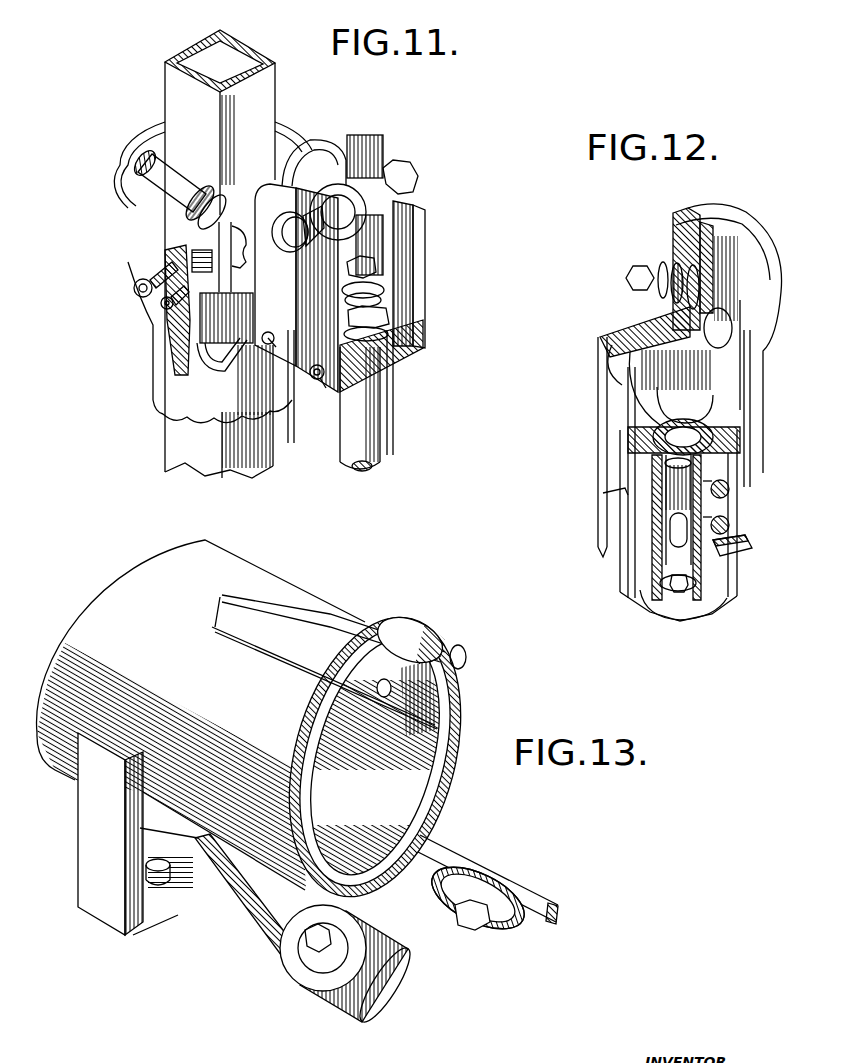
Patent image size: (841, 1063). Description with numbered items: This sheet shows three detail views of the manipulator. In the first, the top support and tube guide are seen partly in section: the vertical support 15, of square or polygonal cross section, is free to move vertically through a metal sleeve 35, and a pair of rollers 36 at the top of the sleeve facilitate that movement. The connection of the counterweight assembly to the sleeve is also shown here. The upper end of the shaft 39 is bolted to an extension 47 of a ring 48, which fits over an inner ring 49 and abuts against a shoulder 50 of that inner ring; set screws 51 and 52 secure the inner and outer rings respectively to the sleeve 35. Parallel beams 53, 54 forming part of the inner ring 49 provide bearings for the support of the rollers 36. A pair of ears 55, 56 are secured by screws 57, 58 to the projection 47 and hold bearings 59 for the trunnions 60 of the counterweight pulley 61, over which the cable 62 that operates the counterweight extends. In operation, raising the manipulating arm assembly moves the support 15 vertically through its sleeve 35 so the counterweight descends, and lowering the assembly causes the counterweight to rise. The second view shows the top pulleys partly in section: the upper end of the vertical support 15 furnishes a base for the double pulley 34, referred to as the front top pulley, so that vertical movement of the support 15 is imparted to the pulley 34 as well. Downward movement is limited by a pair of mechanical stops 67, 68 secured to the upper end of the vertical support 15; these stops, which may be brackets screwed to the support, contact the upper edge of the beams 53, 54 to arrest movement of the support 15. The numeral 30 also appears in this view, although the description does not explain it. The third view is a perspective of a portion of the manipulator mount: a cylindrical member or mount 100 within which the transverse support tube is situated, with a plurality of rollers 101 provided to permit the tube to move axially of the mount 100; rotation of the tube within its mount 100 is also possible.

In FIG. 11, the vertical support 15 is at (168, 84).
In FIG. 12, the vertical support 15 is at (714, 600).
In FIG. 11, the parallel beam 54 is at (147, 137).
In FIG. 11, the rollers 36 is at (130, 178).
In FIG. 11, the set screw 52 is at (138, 284).
In FIG. 11, the set screw 51 is at (161, 304).
In FIG. 11, the inner ring 49 is at (166, 318).
In FIG. 11, the metal sleeve 35 is at (153, 353).
In FIG. 11, the ring 48 is at (228, 353).
In FIG. 11, the extension 47 is at (238, 373).
In FIG. 11, the parallel beam 53 is at (246, 252).
In FIG. 11, the ear 55 is at (296, 288).
In FIG. 11, the shoulder 50 is at (244, 292).
In FIG. 11, the screw 57 is at (284, 325).
In FIG. 11, the bearings 59 is at (283, 217).
In FIG. 11, the trunnions 60 is at (365, 278).
In FIG. 11, the counterweight pulley 61 is at (325, 150).
In FIG. 11, the ear 56 is at (425, 232).
In FIG. 11, the shaft 39 is at (380, 407).
In FIG. 11, the cable 62 is at (394, 432).
In FIG. 11, the screw 58 is at (318, 381).
In FIG. 12, the double pulley 34 is at (757, 252).
In FIG. 12, the support channel 30 is at (745, 433).
In FIG. 12, the mechanical stop 67 is at (603, 493).
In FIG. 12, the mechanical stop 68 is at (740, 551).
In FIG. 13, the cylindrical member or mount 100 is at (263, 587).
In FIG. 13, the rollers 101 is at (413, 623).